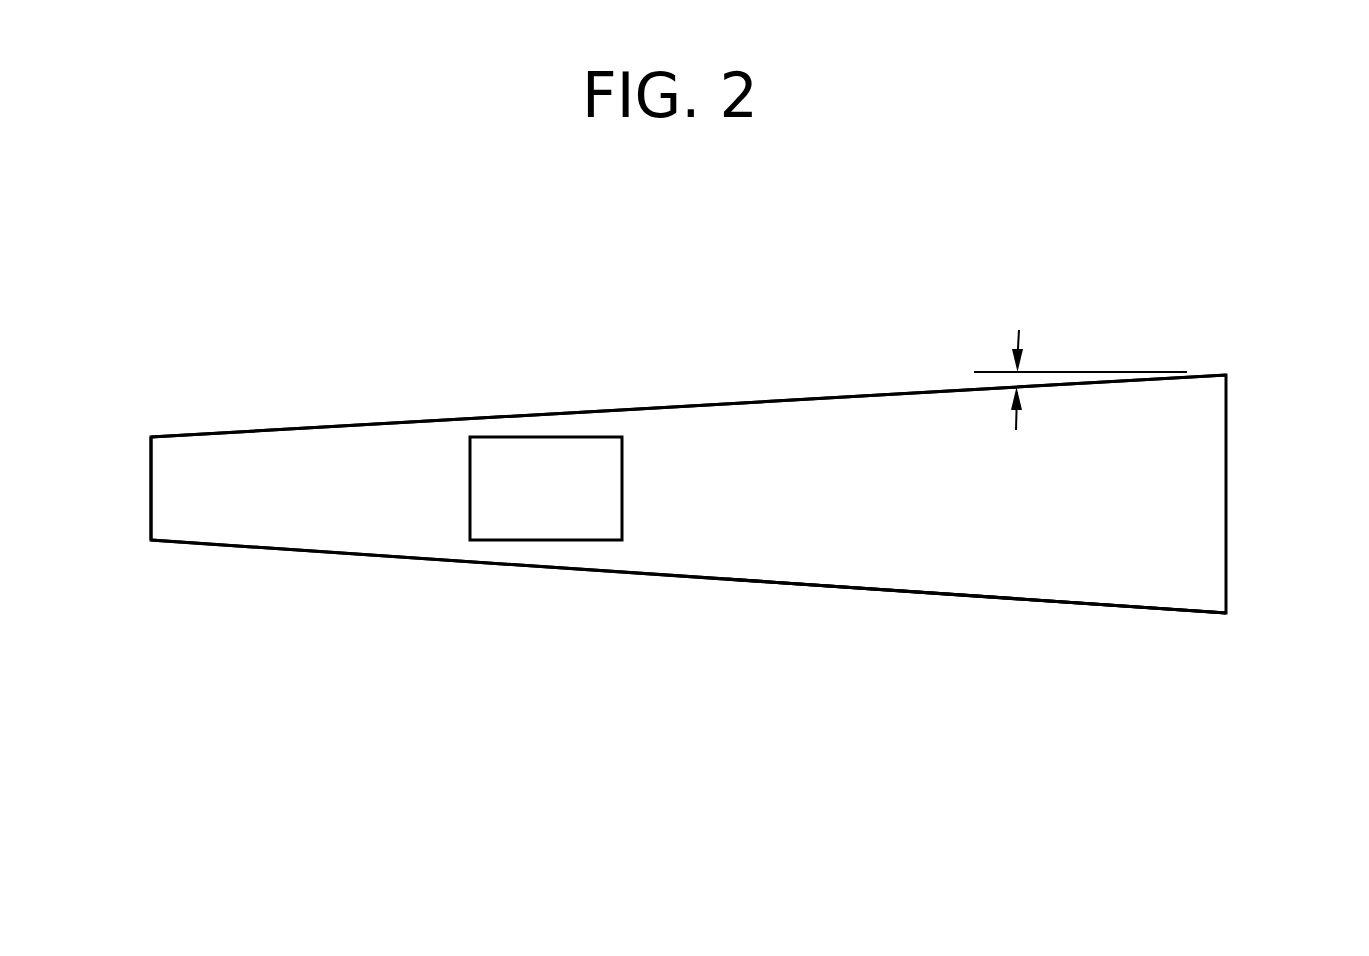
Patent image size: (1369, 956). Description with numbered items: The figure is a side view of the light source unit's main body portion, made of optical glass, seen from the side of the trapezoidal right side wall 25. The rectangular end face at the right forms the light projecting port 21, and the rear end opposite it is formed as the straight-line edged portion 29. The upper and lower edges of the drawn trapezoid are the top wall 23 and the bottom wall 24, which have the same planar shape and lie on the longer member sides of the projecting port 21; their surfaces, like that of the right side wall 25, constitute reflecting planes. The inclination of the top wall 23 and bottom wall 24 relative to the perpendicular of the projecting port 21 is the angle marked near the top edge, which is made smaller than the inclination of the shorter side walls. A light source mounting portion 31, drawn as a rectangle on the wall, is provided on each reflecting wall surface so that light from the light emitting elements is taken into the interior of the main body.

The projecting port 21 is at (1226, 495).
The top wall 23 is at (793, 398).
The bottom wall 24 is at (727, 582).
The right side wall 25 is at (904, 560).
The straight-line edged portion 29 is at (151, 495).
The light source mounting portion 31 is at (524, 520).